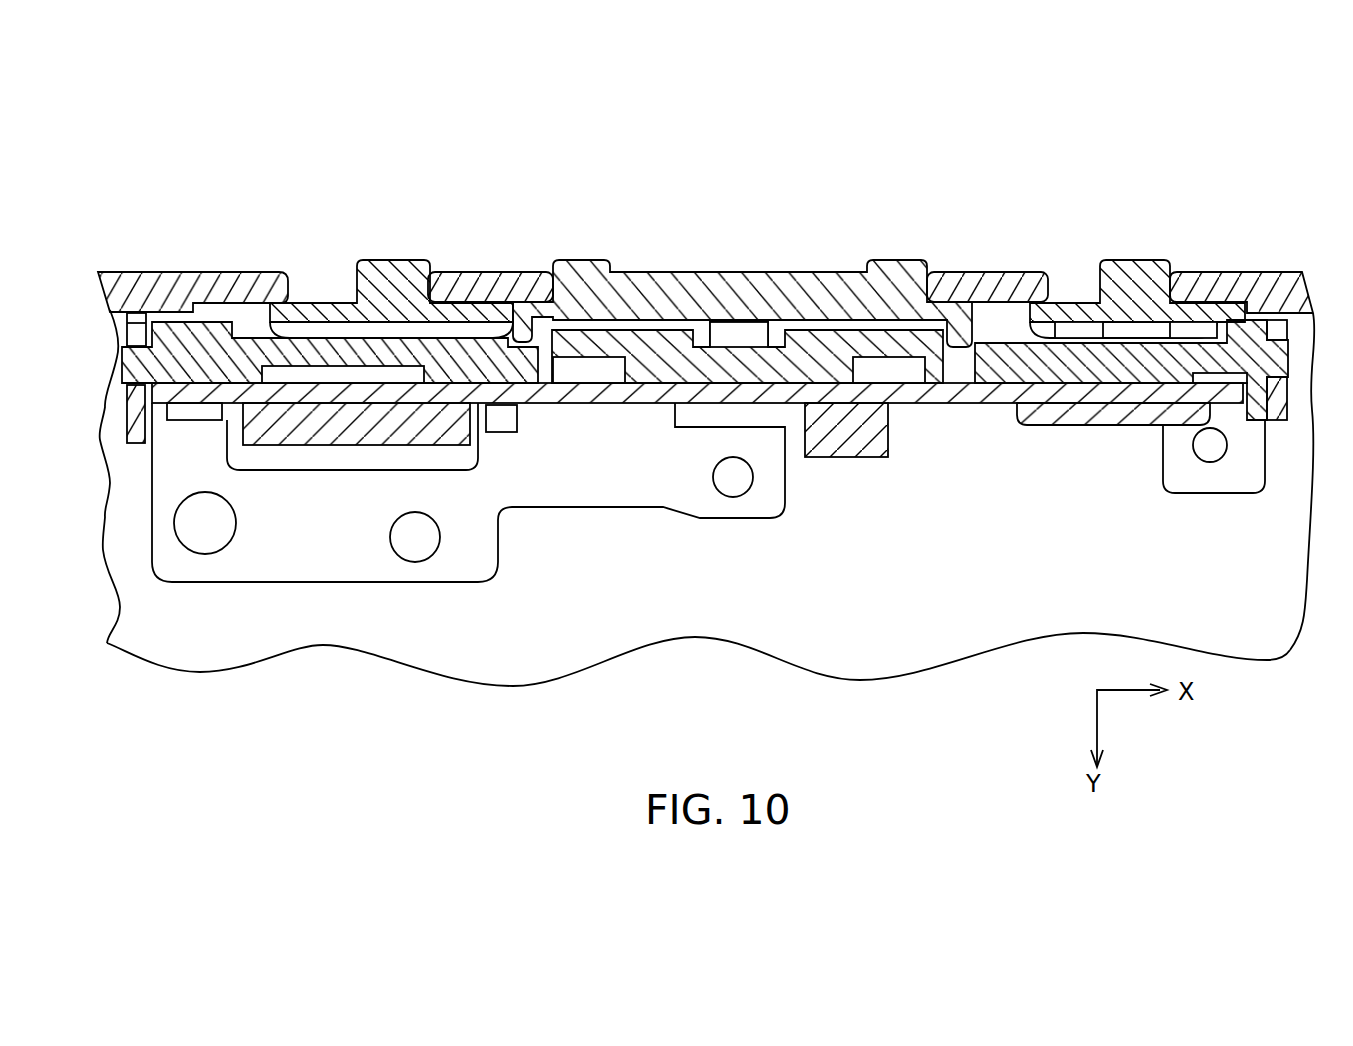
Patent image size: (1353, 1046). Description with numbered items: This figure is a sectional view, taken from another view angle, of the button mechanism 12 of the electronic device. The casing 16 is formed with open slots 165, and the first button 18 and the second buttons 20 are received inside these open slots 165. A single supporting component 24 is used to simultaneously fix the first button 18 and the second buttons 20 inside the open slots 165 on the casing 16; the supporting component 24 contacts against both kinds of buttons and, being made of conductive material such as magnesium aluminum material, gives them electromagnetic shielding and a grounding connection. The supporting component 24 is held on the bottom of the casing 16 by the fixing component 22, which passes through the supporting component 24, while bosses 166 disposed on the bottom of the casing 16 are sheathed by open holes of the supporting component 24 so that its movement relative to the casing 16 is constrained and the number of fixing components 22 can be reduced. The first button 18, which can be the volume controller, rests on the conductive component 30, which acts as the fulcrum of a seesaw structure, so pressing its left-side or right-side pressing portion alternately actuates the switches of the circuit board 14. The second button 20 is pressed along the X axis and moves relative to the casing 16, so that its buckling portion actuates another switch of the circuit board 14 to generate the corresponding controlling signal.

The button mechanism 12 is at (1040, 156).
The circuit board 14 is at (790, 400).
The casing 16 is at (170, 290).
The first button 18 is at (822, 292).
The second button 20 is at (335, 302).
The fixing component 22 is at (737, 482).
The supporting component 24 is at (994, 380).
The conductive component 30 is at (740, 325).
The open slot 165 is at (300, 270).
The boss 166 is at (423, 538).